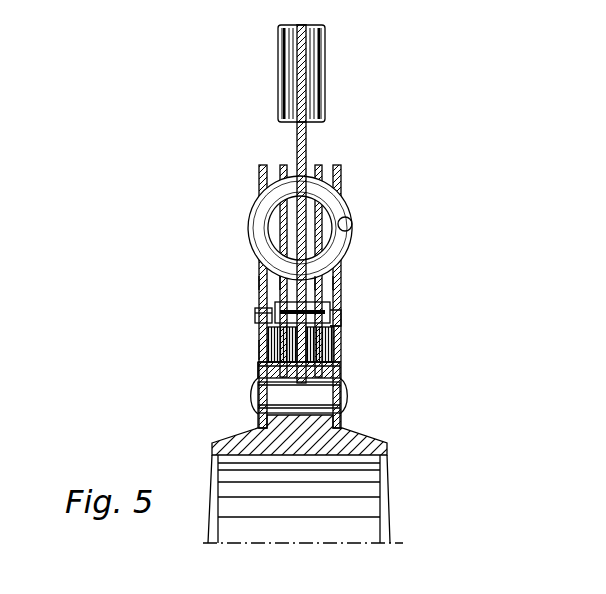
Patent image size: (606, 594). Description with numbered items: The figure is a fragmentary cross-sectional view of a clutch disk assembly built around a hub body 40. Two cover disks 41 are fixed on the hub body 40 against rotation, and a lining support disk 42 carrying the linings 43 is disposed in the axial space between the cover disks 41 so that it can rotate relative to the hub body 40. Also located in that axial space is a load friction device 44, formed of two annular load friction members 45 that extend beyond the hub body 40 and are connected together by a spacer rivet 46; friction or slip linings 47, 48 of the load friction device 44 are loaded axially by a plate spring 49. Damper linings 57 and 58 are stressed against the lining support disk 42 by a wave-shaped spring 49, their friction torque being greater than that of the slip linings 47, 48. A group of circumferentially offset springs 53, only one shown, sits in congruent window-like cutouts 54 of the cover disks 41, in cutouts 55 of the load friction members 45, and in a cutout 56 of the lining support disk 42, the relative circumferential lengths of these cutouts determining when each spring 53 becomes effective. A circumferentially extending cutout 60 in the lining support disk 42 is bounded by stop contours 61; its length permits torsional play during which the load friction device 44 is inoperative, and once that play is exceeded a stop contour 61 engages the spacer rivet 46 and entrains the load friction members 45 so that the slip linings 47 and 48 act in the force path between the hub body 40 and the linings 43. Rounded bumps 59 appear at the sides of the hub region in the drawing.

The hub body 40 is at (383, 445).
The cover disks 41 is at (258, 418).
The lining support disk 42 is at (300, 143).
The linings 43 is at (297, 58).
The load friction device 44 is at (345, 405).
The load friction members 45 is at (275, 345).
The spacer rivet 46 is at (341, 313).
The friction lining 47 is at (260, 370).
The friction lining 48 is at (335, 375).
The plate spring 49 is at (257, 318).
The springs 53 is at (352, 228).
The window-like cutouts 54 is at (352, 272).
The cutouts 55 is at (284, 289).
The cutout 56 is at (318, 168).
The damper lining 57 is at (261, 349).
The damper lining 58 is at (330, 368).
The bumps 59 is at (248, 392).
The cutout 60 is at (342, 304).
The stop contours 61 is at (339, 330).